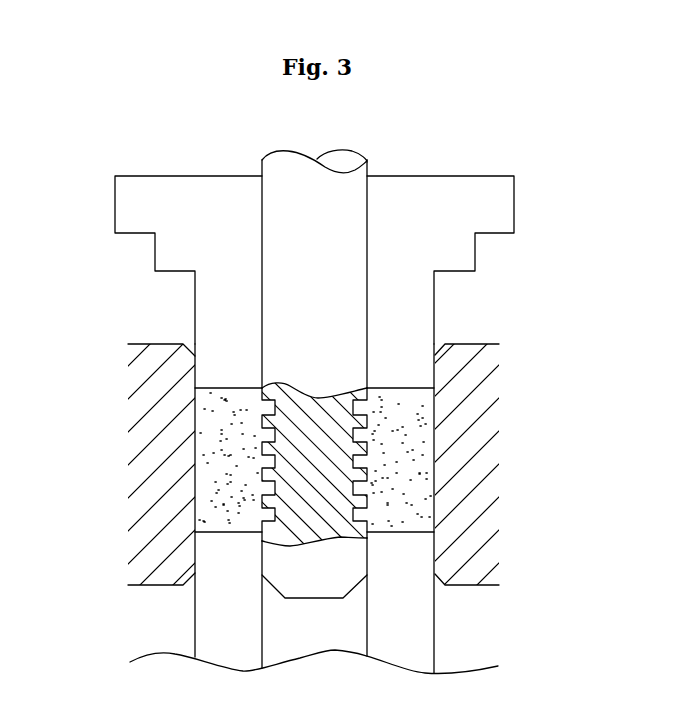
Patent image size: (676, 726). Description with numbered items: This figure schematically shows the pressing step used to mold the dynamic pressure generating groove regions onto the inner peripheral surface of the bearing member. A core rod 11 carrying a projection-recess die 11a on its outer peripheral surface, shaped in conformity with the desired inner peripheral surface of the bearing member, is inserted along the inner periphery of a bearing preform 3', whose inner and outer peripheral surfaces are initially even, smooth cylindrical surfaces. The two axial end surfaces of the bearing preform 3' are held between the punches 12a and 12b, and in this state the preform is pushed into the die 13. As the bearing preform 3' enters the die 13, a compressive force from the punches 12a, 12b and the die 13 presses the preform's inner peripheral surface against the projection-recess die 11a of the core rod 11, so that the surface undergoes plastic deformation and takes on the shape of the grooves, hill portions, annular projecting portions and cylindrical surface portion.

The core rod 11 is at (283, 166).
The projection-recess die 11a is at (357, 526).
The punch 12a is at (136, 205).
The punch 12b is at (223, 647).
The die 13 is at (500, 515).
The bearing preform 3' is at (371, 460).